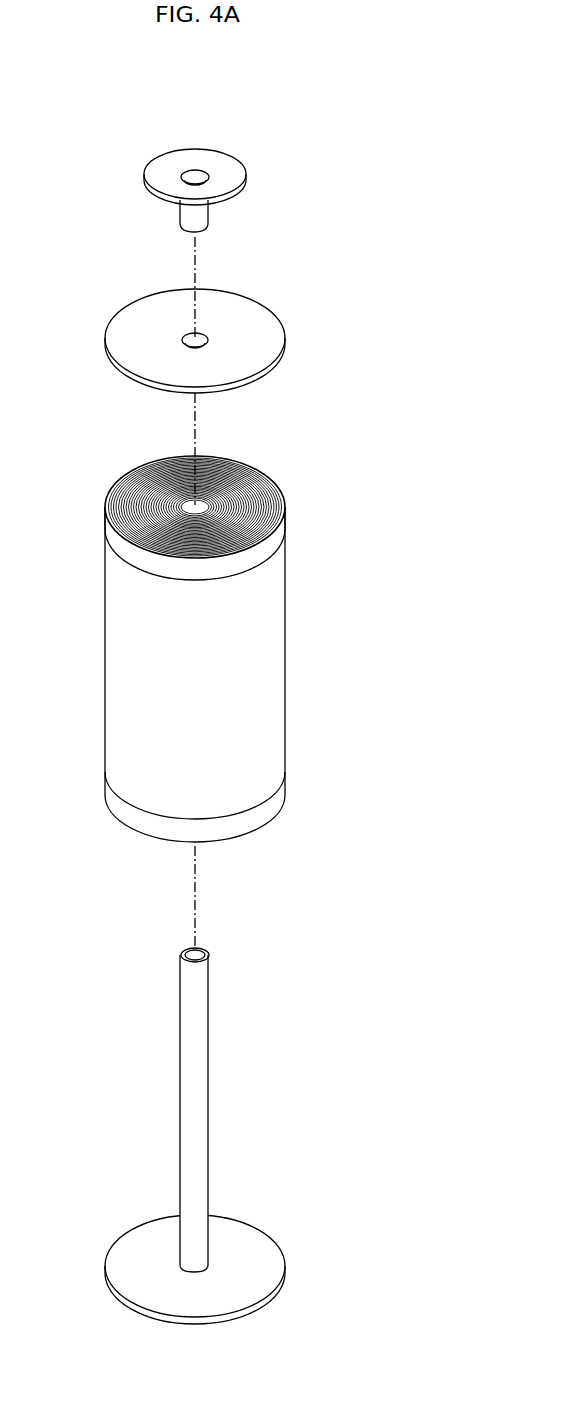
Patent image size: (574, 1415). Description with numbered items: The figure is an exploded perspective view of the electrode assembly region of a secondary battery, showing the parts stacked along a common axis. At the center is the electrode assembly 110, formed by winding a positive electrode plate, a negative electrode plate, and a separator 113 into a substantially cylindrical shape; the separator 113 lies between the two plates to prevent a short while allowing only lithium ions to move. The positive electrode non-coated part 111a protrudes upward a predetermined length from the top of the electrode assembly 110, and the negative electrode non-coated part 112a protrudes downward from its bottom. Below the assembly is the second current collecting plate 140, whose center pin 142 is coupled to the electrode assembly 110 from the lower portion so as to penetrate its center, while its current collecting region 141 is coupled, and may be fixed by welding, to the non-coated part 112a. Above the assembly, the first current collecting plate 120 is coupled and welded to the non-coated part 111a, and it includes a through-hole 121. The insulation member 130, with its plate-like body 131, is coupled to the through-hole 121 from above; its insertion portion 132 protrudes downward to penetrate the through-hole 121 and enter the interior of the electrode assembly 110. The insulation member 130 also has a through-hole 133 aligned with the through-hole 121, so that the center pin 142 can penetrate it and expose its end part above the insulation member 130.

The electrode assembly 110 is at (244, 649).
The positive electrode non-coated part 111a is at (285, 498).
The negative electrode non-coated part 112a is at (275, 800).
The separator 113 is at (275, 607).
The first current collecting plate 120 is at (237, 369).
The through-hole 121 is at (203, 346).
The insulation member 130 is at (261, 169).
The cap plate 131 is at (238, 177).
The insertion portion 132 is at (205, 218).
The through-hole 133 is at (195, 174).
The second current collecting plate 140 is at (220, 1136).
The current collecting region 141 is at (272, 1260).
The center pin 142 is at (201, 973).